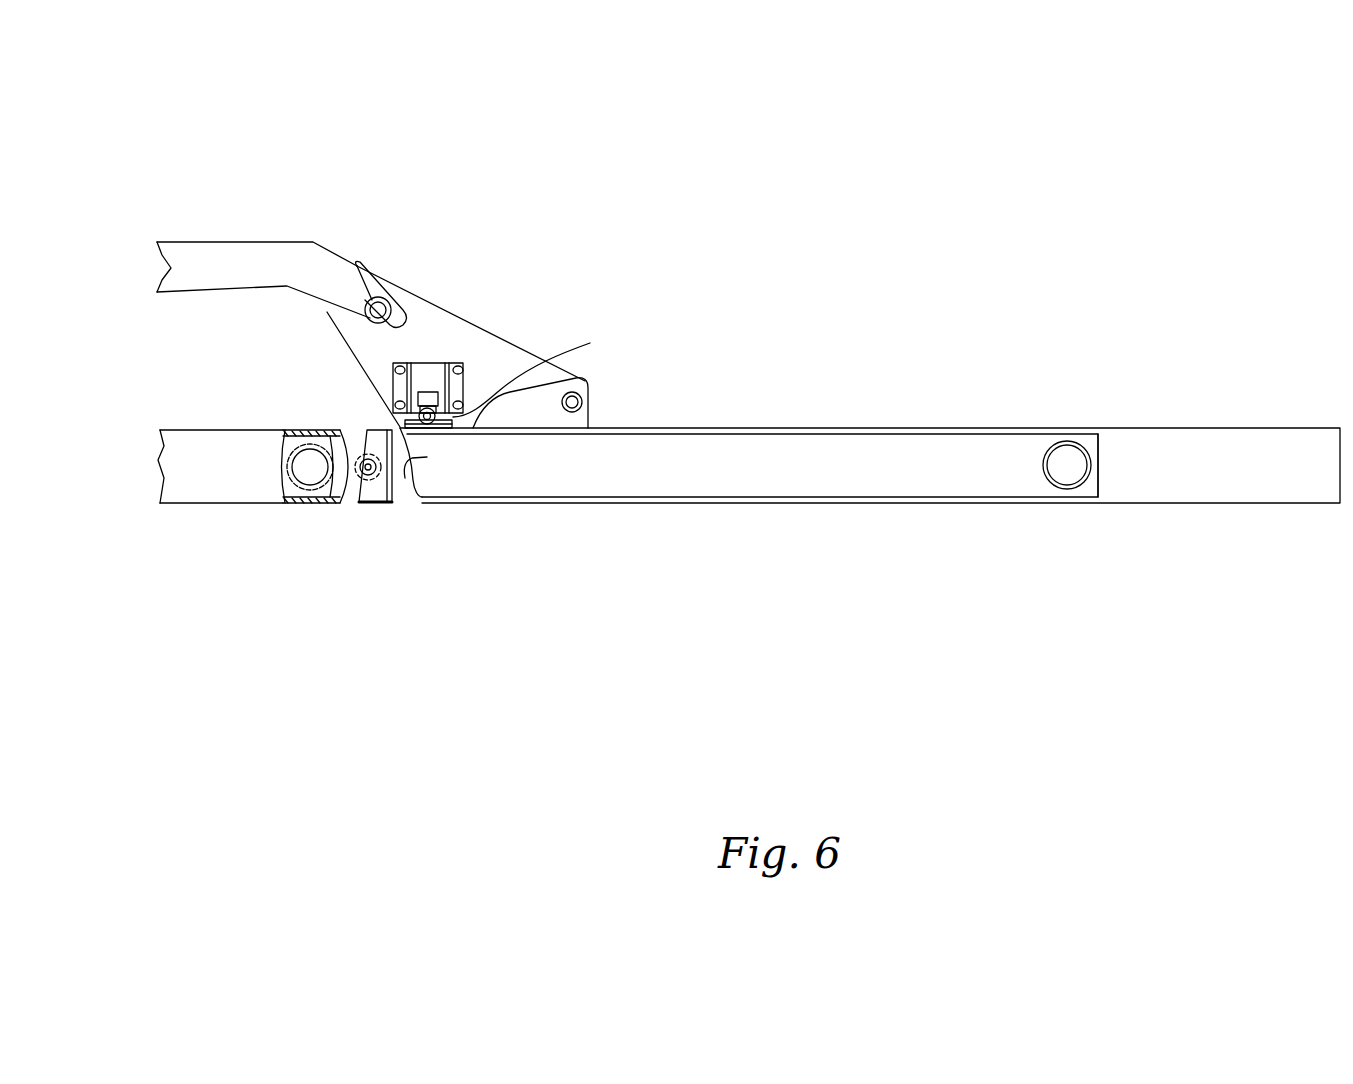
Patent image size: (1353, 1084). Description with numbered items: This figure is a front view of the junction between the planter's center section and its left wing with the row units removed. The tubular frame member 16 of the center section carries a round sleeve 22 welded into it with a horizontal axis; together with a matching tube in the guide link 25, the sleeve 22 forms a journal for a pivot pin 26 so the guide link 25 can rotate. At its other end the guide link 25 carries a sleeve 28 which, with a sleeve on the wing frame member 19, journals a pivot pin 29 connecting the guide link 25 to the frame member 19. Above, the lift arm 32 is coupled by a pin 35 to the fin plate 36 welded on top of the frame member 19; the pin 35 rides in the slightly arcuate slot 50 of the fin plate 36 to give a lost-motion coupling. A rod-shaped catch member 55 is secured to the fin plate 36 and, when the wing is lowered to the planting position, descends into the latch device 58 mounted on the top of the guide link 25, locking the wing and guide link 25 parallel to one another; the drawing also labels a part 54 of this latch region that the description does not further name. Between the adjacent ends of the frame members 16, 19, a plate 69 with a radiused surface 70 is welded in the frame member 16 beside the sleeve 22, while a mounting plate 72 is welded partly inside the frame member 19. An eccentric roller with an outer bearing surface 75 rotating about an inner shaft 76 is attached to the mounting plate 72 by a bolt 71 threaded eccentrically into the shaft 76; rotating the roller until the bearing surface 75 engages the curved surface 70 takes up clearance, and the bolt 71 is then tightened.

The frame member 16 is at (215, 490).
The tubular frame member 19 is at (1205, 455).
The sleeve 22 is at (298, 455).
The guide link 25 is at (920, 483).
The pivot pin 26 is at (282, 503).
The sleeve 28 is at (1083, 483).
The pivot pin 29 is at (1065, 460).
The lift arm 32 is at (242, 240).
The pin 35 is at (355, 317).
The fin plate 36 is at (560, 383).
The slot 50 is at (412, 298).
The bracket 54 is at (430, 378).
The catch member 55 is at (490, 341).
The latch device 58 is at (450, 433).
The plate 69 is at (330, 490).
The radiused surface 70 is at (353, 437).
The bolt 71 is at (362, 487).
The mounting plate 72 is at (380, 503).
The bearing surface 75 is at (417, 497).
The shaft 76 is at (370, 503).